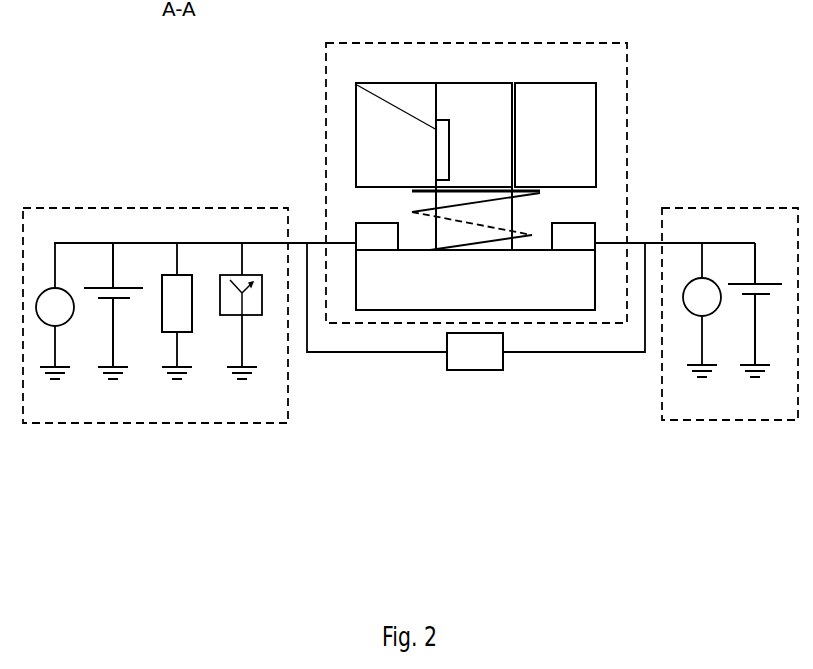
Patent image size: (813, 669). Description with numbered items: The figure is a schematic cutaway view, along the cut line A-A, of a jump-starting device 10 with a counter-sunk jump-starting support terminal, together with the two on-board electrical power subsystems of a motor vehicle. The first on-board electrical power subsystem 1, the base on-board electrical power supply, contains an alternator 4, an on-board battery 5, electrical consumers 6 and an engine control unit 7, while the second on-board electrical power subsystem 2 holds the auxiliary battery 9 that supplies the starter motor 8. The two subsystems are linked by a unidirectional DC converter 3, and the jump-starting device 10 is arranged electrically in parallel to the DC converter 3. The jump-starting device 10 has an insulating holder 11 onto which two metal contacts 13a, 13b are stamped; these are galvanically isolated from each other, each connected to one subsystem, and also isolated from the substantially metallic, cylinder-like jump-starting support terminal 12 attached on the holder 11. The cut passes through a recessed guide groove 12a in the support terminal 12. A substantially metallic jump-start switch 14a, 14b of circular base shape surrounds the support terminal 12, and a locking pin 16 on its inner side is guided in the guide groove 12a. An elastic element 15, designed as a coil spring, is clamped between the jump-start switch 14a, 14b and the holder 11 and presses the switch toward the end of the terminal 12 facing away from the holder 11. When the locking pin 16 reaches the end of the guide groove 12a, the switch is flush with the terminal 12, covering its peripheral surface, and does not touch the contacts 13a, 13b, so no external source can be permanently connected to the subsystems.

The first on-board electrical power subsystem 1 is at (155, 315).
The second on-board electrical power subsystem 2 is at (730, 314).
The DC converter 3 is at (475, 351).
The alternator 4 is at (55, 311).
The on-board battery 5 is at (143, 293).
The electrical consumers 6 is at (177, 311).
The engine control unit 7 is at (227, 318).
The starter motor 8 is at (702, 310).
The auxiliary battery 9 is at (783, 290).
The jump-starting device 10 is at (476, 182).
The insulating holder 11 is at (522, 292).
The jump-starting support terminal 12 is at (472, 103).
The guide groove 12a is at (455, 128).
The metal contact 13a is at (388, 239).
The metal contact 13b is at (565, 239).
The jump-start switch 14a is at (388, 137).
The jump-start switch 14b is at (570, 152).
The elastic element 15 is at (448, 220).
The locking pin 16 is at (357, 84).